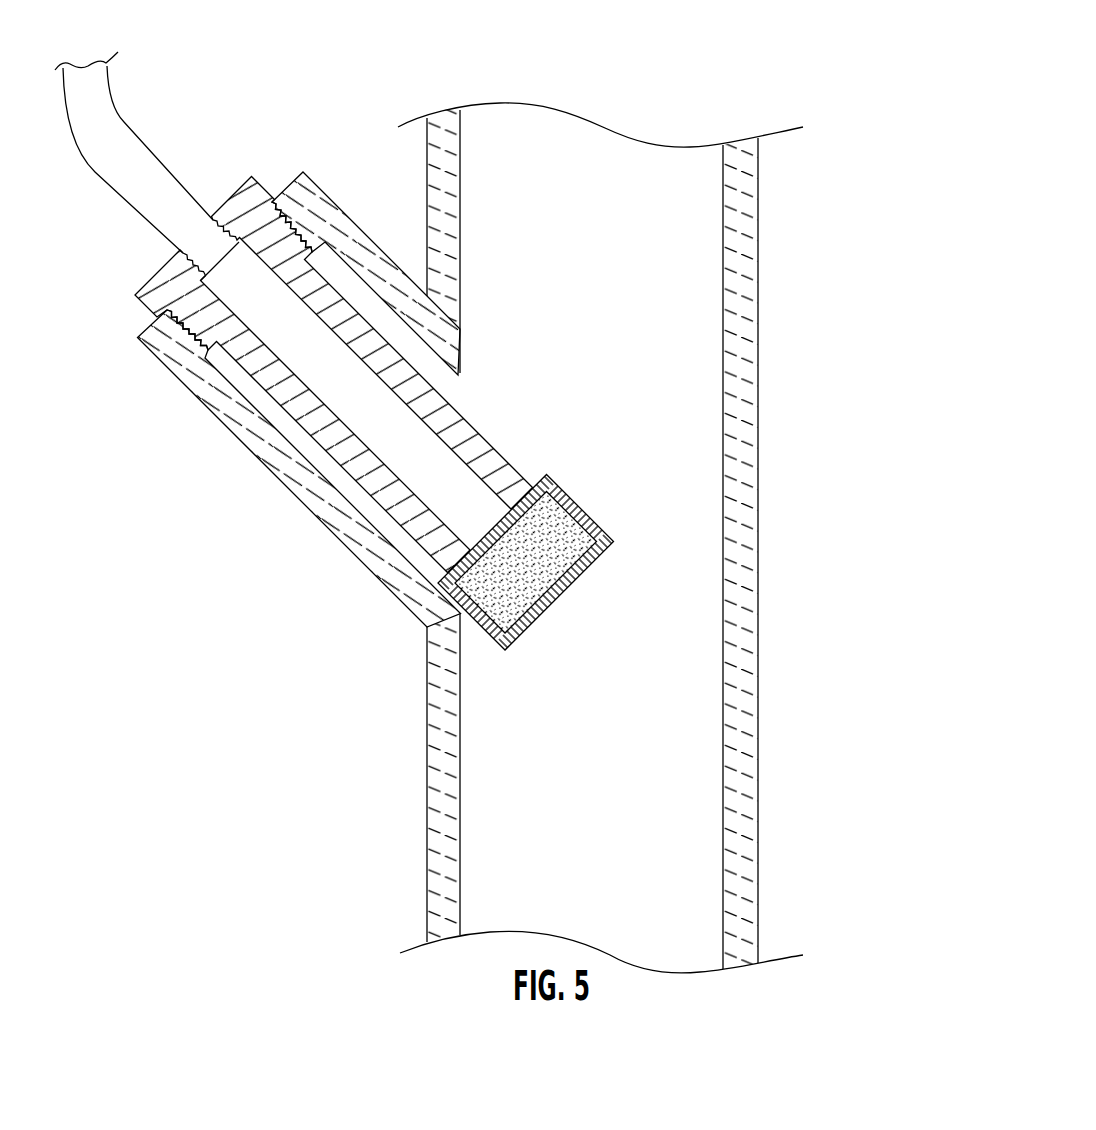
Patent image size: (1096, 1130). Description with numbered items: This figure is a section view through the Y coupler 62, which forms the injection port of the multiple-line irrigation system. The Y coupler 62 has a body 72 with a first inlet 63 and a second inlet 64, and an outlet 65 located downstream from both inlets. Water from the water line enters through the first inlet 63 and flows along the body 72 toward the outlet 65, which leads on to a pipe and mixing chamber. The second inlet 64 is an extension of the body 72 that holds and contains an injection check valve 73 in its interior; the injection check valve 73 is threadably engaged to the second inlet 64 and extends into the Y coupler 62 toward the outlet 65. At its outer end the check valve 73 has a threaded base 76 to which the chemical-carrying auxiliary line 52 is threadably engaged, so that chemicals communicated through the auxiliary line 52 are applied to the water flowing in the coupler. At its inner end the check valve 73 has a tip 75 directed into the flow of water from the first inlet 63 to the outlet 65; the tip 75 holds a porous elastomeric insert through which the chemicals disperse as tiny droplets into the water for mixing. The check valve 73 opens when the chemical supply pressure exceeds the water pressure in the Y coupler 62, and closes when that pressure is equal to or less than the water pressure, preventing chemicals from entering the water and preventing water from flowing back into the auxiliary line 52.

The auxiliary line 52 is at (118, 108).
The Y coupler 62 is at (879, 219).
The first inlet 63 is at (427, 187).
The second inlet 64 is at (258, 457).
The outlet 65 is at (428, 873).
The body 72 is at (760, 512).
The injection check valve 73 is at (420, 527).
The tip 75 is at (582, 507).
The threaded base 76 is at (260, 180).